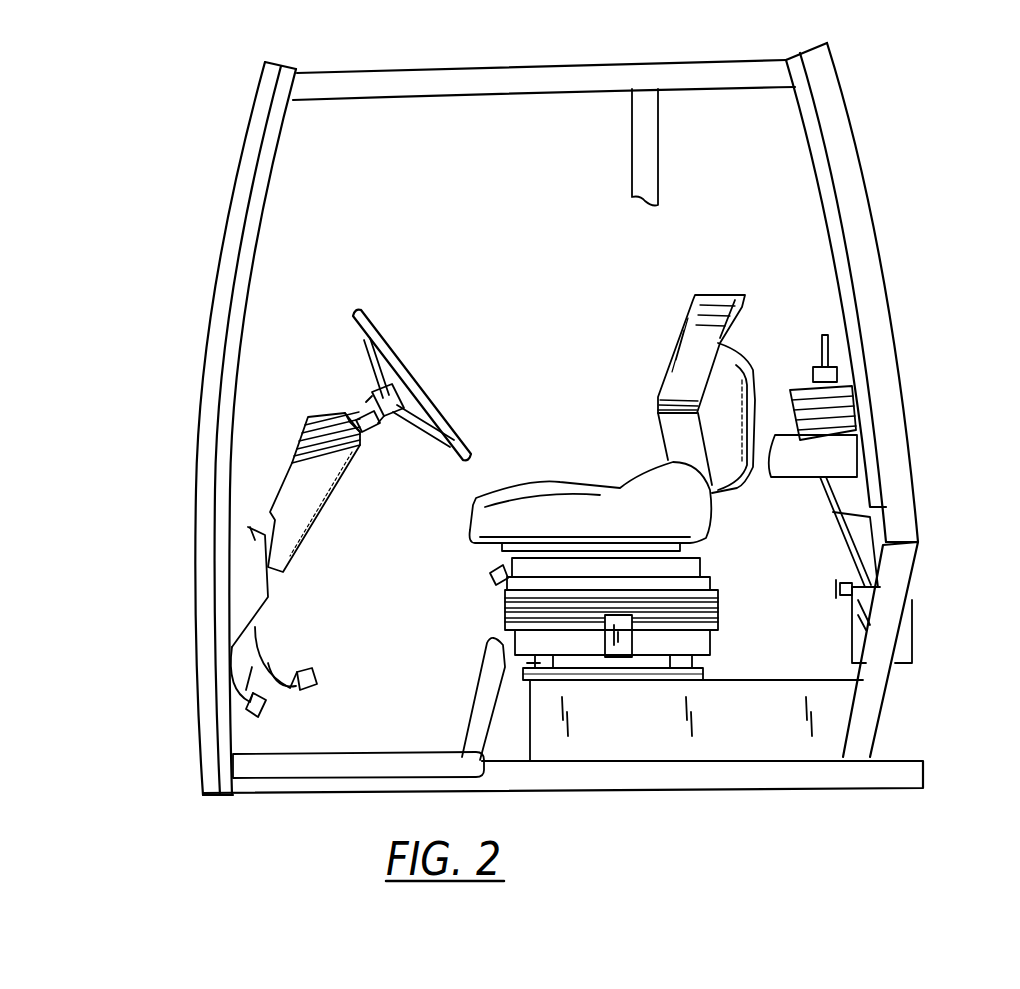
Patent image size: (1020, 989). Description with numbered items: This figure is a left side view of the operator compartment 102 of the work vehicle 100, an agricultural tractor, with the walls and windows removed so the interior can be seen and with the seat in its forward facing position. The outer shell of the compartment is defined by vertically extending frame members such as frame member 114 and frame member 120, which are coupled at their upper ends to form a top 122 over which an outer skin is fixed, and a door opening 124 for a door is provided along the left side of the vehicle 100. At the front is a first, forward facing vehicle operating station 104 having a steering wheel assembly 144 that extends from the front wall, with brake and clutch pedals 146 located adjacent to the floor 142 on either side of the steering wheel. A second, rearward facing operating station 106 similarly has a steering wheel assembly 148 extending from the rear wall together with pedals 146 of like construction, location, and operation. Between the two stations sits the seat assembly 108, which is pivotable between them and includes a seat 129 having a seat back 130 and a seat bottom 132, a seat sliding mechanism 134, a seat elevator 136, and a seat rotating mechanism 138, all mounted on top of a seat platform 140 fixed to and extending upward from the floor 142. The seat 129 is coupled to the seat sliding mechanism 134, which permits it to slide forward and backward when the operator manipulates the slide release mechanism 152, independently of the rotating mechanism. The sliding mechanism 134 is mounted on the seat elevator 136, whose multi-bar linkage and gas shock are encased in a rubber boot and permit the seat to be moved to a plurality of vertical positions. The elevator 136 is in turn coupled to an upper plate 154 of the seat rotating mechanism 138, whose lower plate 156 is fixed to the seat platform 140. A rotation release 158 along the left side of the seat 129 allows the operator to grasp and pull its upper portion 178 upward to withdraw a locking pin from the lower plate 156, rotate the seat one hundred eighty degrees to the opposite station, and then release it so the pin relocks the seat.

The work vehicle 100 is at (880, 142).
The operator compartment 102 is at (880, 212).
The first forward facing vehicle operating station 104 is at (278, 451).
The second rearward facing operating station 106 is at (910, 351).
The seat assembly 108 is at (605, 397).
The vertically extending frame member 114 is at (830, 84).
The vertically extending frame member 120 is at (222, 272).
The top 122 is at (456, 72).
The door opening 124 is at (545, 120).
The seat 129 is at (700, 516).
The seat back 130 is at (690, 312).
The seat bottom 132 is at (562, 485).
The seat sliding mechanism 134 is at (702, 569).
The seat elevator 136 is at (720, 612).
The seat rotating mechanism 138 is at (710, 668).
The seat platform 140 is at (652, 739).
The floor 142 is at (386, 752).
The steering wheel assembly 144 is at (275, 478).
The brake and clutch pedals 146 is at (300, 667).
The steering wheel assembly 148 is at (856, 397).
The slide release mechanism 152 is at (490, 580).
The upper plate 154 is at (565, 650).
The lower plate 156 is at (527, 663).
The rotation release 158 is at (710, 638).
The upper portion 178 is at (715, 592).